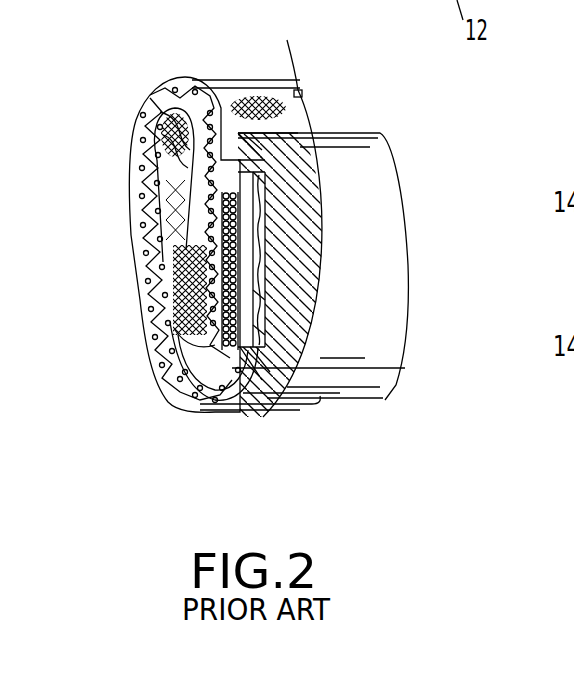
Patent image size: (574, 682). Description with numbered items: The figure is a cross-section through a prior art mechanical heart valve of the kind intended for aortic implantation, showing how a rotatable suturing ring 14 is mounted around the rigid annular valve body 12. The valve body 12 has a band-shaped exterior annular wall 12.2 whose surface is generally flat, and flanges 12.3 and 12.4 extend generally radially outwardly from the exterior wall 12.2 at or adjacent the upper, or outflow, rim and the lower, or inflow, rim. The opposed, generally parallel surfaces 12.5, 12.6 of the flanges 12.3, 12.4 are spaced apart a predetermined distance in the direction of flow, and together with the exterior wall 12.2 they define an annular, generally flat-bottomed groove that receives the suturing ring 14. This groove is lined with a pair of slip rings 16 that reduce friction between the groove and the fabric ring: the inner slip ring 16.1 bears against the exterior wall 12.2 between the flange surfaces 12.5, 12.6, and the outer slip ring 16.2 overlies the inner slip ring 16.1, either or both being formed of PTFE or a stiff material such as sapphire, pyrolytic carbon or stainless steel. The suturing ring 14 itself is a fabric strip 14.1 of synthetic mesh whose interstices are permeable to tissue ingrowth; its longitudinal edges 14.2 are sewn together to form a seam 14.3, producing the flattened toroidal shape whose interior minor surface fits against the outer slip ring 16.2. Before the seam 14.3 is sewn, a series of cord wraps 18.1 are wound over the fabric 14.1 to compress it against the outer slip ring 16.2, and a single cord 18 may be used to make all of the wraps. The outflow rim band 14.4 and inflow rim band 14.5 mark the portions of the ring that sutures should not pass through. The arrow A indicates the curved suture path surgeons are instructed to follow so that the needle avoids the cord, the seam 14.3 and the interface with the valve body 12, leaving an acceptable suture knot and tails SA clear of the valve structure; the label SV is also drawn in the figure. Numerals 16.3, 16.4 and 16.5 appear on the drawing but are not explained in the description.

The annular valve body 12 is at (313, 277).
The exterior annular wall 12.2 is at (255, 240).
The upper flange 12.3 is at (255, 155).
The lower flange 12.4 is at (258, 400).
The flange surface 12.5 is at (253, 160).
The flange surface 12.6 is at (245, 405).
The rotatable suturing ring 14 is at (140, 94).
The fabric strip 14.1 is at (147, 318).
The longitudinal edges 14.2 is at (195, 246).
The seam 14.3 is at (172, 186).
The outflow rim band 14.4 is at (264, 100).
The inflow rim band 14.5 is at (240, 408).
The slip rings 16 is at (225, 268).
The inner slip ring 16.1 is at (300, 301).
The outer slip ring 16.2 is at (312, 333).
The upper sealing surface 16.3 is at (262, 212).
The lower flange surface 16.4 is at (405, 368).
The lower sealing surface 16.5 is at (262, 380).
The cord 18 is at (205, 292).
The cord wraps 18.1 is at (162, 357).
The acceptable suture knot and tails SA is at (143, 96).
The sealing surface V SV is at (297, 90).
The arrow A— A is at (143, 96).